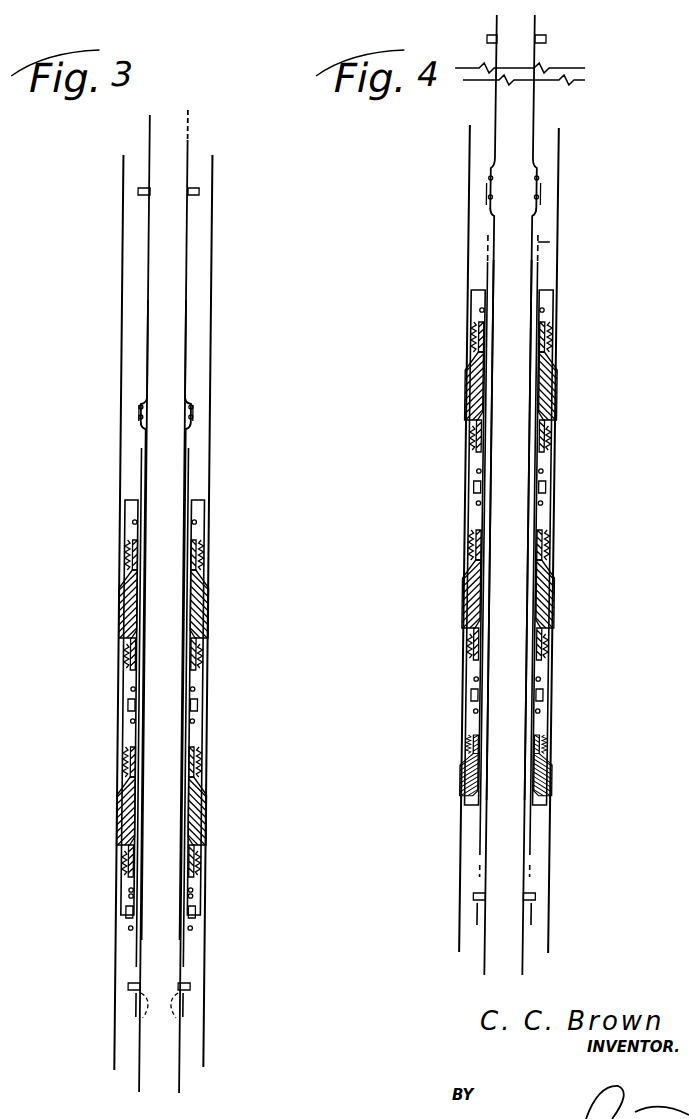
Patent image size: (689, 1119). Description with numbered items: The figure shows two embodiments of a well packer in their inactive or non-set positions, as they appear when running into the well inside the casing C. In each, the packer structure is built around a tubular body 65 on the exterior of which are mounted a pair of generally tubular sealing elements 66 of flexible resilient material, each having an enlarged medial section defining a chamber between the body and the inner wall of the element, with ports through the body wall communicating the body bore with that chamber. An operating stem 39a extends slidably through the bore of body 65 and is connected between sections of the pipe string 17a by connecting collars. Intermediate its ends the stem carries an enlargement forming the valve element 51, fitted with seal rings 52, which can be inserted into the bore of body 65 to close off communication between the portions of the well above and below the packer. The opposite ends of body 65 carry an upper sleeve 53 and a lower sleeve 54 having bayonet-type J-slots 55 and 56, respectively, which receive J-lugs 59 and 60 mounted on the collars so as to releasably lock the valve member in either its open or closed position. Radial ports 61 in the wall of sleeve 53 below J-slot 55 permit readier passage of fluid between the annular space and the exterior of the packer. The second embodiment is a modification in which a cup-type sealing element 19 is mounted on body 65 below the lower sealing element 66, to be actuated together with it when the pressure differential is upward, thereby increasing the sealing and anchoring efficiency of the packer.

In FIG. 3, the pipe string 17a is at (192, 136).
In FIG. 4, the pipe string 17a is at (537, 20).
In FIG. 3, the J-lug 59 is at (202, 189).
In FIG. 4, the J-lug 59 is at (548, 39).
In FIG. 3, the casing C is at (216, 241).
In FIG. 4, the casing C is at (562, 145).
In FIG. 3, the operating stem 39a is at (192, 298).
In FIG. 4, the operating stem 39a is at (496, 272).
In FIG. 3, the valve element 51 is at (147, 428).
In FIG. 4, the valve element 51 is at (540, 182).
In FIG. 3, the seal rings 52 is at (143, 417).
In FIG. 4, the seal rings 52 is at (544, 196).
In FIG. 3, the upper sleeve 53 is at (199, 410).
In FIG. 4, the upper sleeve 53 is at (545, 242).
In FIG. 3, the J-slot 55 is at (195, 436).
In FIG. 4, the J-slot 55 is at (541, 222).
In FIG. 4, the radial ports 61 is at (545, 255).
In FIG. 3, the tubular body 65 is at (199, 478).
In FIG. 4, the tubular body 65 is at (545, 277).
In FIG. 3, the sealing elements 66 is at (216, 606).
In FIG. 4, the sealing elements 66 is at (565, 402).
In FIG. 4, the cup-type sealing element 19 is at (567, 785).
In FIG. 3, the J-slot 56 is at (198, 975).
In FIG. 4, the J-slot 56 is at (545, 886).
In FIG. 3, the J-lug 60 is at (200, 990).
In FIG. 4, the J-lug 60 is at (550, 893).
In FIG. 4, the lower sleeve 54 is at (545, 913).